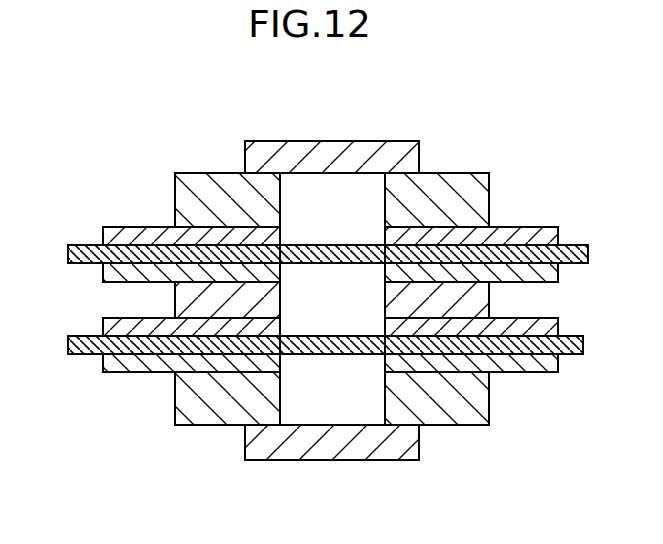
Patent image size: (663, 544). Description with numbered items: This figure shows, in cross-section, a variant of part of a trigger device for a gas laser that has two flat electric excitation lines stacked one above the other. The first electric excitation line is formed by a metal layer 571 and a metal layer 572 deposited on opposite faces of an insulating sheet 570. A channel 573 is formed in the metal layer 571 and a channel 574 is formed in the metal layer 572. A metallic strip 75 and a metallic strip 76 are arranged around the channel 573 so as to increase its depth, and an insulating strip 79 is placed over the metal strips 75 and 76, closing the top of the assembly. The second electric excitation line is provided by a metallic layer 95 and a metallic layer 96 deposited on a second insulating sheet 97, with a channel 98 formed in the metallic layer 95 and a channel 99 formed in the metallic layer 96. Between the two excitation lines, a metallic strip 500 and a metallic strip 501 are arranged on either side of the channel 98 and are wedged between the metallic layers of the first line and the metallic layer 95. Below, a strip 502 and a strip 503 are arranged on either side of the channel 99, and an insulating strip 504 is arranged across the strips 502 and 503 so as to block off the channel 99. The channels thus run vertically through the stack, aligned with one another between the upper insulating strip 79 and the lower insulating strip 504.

The channel 573 is at (335, 233).
The channel 574 is at (350, 280).
The insulating strip 79 is at (420, 147).
The metallic strip 75 is at (215, 195).
The metallic strip 76 is at (468, 188).
The metal layer 571 is at (138, 237).
The insulating sheet 570 is at (85, 250).
The metal layer 572 is at (113, 273).
The metallic strip 500 is at (205, 298).
The metallic strip 501 is at (470, 300).
The metallic layer 95 is at (115, 332).
The insulating sheet 97 is at (85, 347).
The metallic layer 96 is at (133, 365).
The metallic strip 502 is at (198, 410).
The metallic strip 503 is at (469, 405).
The insulating strip 504 is at (272, 442).
The channel 98 is at (318, 323).
The channel 99 is at (367, 360).